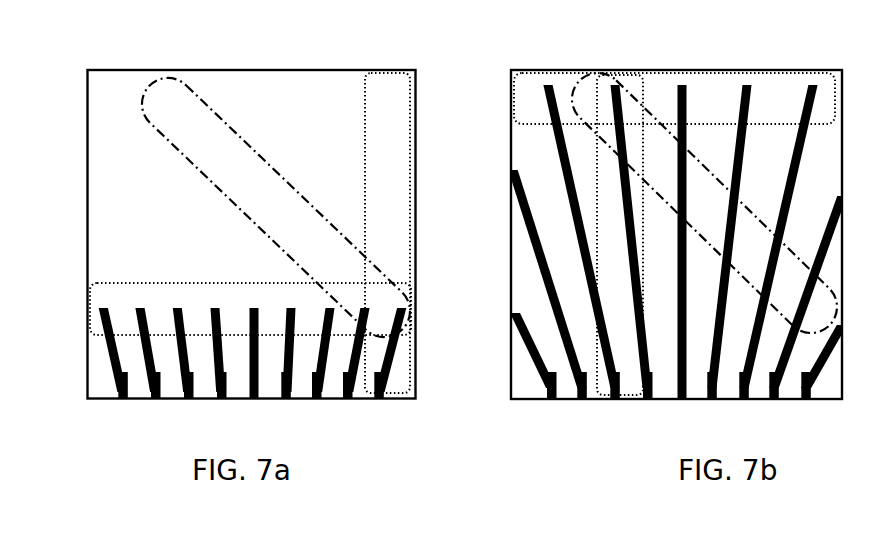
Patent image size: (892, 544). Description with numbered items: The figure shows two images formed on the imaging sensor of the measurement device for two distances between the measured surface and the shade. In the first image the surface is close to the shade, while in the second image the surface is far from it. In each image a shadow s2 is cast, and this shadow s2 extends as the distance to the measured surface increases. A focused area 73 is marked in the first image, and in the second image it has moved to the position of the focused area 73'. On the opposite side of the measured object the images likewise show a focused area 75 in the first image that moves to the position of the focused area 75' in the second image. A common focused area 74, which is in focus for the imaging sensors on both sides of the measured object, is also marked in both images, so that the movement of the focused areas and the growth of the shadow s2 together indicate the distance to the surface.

In FIG. 7a, the focused area 73 is at (228, 340).
In FIG. 7a, the common focused area 74 is at (190, 88).
In FIG. 7b, the common focused area 74 is at (585, 82).
In FIG. 7a, the focused area 75 is at (363, 202).
In FIG. 7a, the shadow s2 is at (98, 316).
In FIG. 7b, the shadow s2 is at (523, 345).
In FIG. 7b, the focused area 73' is at (674, 68).
In FIG. 7b, the focused area 75' is at (610, 266).